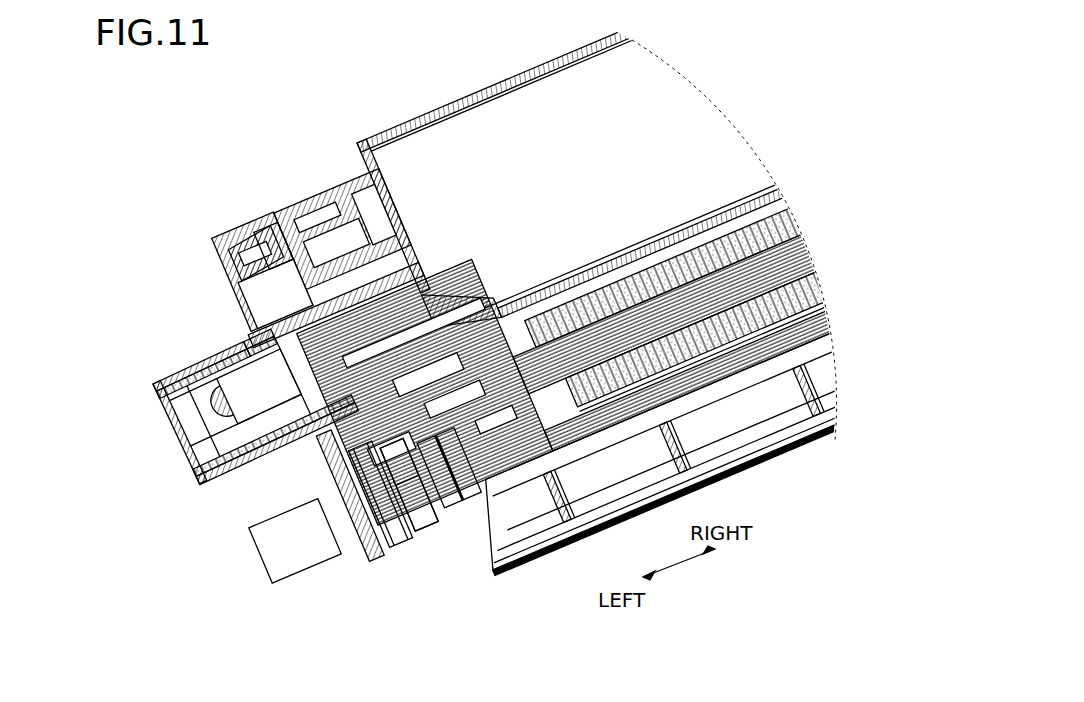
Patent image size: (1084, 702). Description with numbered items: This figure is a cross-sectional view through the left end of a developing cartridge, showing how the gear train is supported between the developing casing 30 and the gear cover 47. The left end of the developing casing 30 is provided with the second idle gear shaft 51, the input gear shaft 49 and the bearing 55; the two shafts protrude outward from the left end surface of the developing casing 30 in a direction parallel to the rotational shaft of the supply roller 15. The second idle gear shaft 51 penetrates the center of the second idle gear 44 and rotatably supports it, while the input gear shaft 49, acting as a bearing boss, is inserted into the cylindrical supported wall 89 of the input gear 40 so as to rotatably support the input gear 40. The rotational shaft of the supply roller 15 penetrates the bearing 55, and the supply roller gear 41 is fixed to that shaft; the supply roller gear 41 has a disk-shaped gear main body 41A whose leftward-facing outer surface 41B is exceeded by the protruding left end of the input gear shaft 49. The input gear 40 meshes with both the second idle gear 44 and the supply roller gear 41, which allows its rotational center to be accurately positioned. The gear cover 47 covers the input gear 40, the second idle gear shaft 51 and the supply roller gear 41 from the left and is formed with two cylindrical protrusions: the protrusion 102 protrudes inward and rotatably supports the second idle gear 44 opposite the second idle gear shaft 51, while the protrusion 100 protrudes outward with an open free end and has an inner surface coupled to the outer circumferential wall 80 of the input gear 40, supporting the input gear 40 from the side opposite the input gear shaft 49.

The developing casing 30 is at (404, 92).
The input gear 40 is at (135, 400).
The supply roller gear 41 is at (390, 458).
The gear main body 41A is at (440, 500).
The outer surface 41B is at (409, 484).
The second idle gear 44 is at (248, 240).
The gear cover 47 is at (217, 270).
The input gear shaft 49 is at (427, 315).
The second idle gear shaft 51 is at (390, 220).
The bearing 55 is at (458, 480).
The outer circumferential wall 80 is at (178, 358).
The supported wall 89 is at (322, 486).
The protrusion 100 is at (210, 356).
The protrusion 102 is at (268, 243).
The supply roller 15 is at (368, 450).